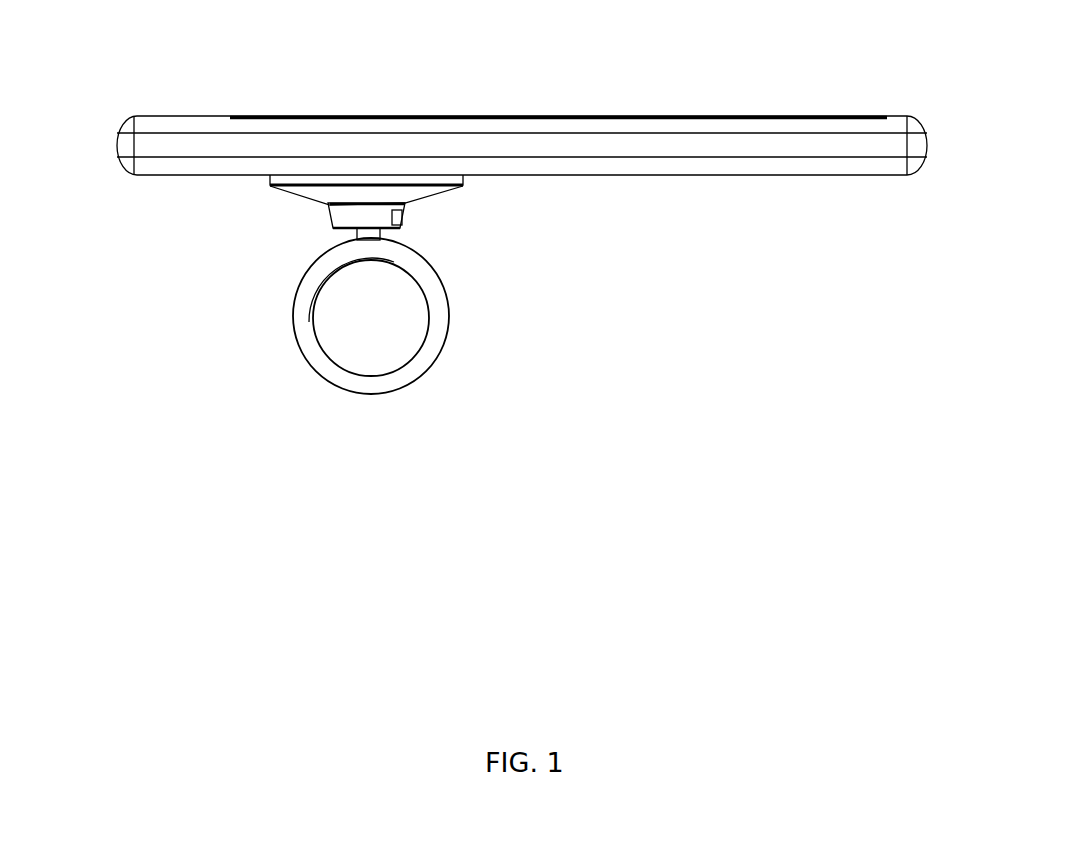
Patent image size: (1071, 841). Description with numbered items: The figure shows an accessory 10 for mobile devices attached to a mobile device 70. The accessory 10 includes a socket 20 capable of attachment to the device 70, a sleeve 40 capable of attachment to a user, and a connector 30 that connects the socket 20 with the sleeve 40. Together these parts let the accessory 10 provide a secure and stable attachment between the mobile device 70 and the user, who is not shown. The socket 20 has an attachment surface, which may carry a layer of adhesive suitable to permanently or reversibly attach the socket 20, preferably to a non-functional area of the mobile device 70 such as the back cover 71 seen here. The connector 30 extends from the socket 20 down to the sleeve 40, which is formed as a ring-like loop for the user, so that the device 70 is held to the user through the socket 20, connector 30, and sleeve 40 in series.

The accessory 10 is at (232, 293).
The socket 20 is at (462, 183).
The connector 30 is at (382, 234).
The sleeve 40 is at (443, 345).
The mobile device 70 is at (713, 115).
The back cover 71 is at (792, 175).